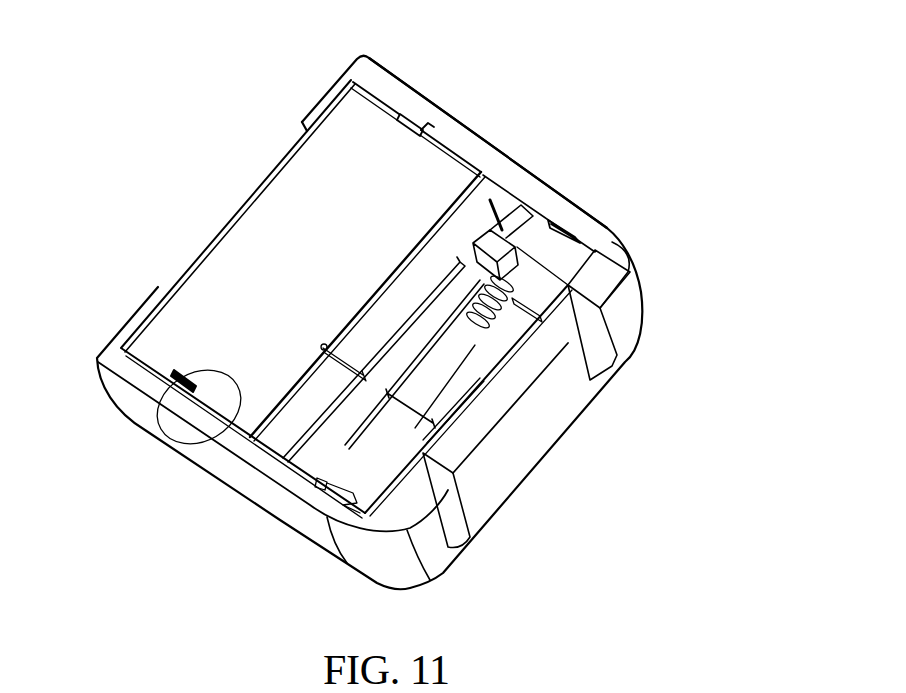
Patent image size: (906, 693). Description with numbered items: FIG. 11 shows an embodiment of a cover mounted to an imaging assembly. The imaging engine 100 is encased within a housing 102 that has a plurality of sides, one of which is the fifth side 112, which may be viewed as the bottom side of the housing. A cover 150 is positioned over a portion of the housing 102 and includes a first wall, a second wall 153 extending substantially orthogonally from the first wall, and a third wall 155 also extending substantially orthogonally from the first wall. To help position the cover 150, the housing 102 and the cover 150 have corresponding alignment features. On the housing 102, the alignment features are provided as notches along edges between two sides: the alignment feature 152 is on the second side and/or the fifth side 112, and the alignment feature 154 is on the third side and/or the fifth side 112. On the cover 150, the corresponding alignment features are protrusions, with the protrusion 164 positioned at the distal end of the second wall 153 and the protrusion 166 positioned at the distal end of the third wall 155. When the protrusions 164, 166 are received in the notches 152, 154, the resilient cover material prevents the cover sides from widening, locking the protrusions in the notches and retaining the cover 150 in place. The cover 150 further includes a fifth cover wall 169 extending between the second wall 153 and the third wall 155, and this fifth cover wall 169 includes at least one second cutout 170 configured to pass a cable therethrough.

The imaging engine 100 is at (180, 139).
The housing 102 is at (250, 218).
The fifth side 112 is at (200, 310).
The cover 150 is at (450, 125).
The alignment feature 152 is at (207, 440).
The second wall 153 is at (270, 508).
The alignment feature 154 is at (400, 130).
The third wall 155 is at (517, 173).
The alignment feature 164 is at (157, 410).
The alignment feature 166 is at (417, 118).
The fifth cover wall 169 is at (537, 430).
The second cutout 170 is at (598, 288).